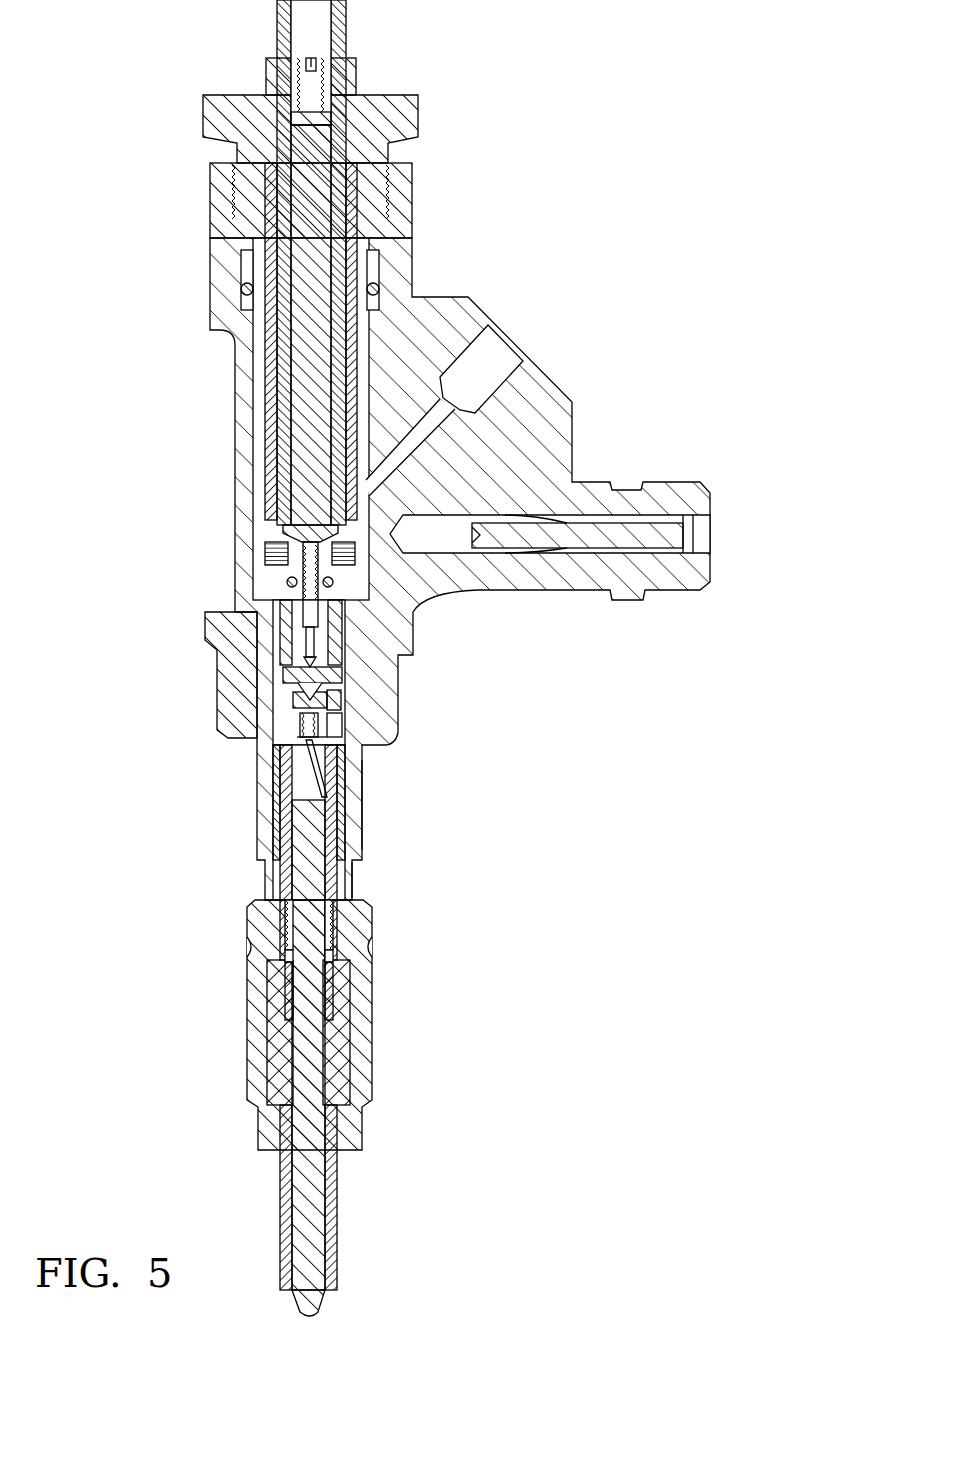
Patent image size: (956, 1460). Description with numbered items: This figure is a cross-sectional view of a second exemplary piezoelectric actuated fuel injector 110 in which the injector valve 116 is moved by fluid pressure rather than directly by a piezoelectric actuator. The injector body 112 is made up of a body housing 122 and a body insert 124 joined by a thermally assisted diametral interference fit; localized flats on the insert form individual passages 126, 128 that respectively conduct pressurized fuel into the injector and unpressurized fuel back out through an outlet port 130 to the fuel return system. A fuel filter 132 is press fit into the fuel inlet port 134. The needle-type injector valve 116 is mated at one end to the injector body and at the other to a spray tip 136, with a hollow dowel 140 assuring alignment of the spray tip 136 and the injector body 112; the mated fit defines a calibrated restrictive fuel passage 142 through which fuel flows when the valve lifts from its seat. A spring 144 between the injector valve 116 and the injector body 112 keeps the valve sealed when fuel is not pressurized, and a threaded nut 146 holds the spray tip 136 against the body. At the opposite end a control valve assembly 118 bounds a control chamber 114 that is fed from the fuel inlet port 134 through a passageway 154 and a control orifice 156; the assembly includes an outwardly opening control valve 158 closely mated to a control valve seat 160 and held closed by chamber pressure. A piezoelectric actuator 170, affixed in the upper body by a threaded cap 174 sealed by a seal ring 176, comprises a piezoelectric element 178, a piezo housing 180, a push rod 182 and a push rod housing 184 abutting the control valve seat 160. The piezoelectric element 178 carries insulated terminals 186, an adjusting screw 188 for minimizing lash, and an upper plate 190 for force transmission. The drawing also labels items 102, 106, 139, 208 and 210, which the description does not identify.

The threaded connection 102 is at (335, 905).
The valve head 106 is at (303, 528).
The piezoelectric actuated fuel injector 110 is at (562, 175).
The injector body 112 is at (600, 598).
The control chamber 114 is at (327, 734).
The injector valve 116 is at (300, 1220).
The control valve assembly 118 is at (325, 717).
The body housing 122 is at (366, 810).
The body insert 124 is at (360, 860).
The passage 126 is at (346, 777).
The passage 128 is at (278, 690).
The outlet port 130 is at (505, 372).
The fuel filter 132 is at (510, 548).
The fuel inlet port 134 is at (716, 522).
The spray tip 136 is at (335, 1135).
The tip 139 is at (322, 1293).
The hollow dowel 140 is at (323, 1050).
The calibrated restrictive fuel passage 142 is at (333, 1008).
The spring 144 is at (333, 948).
The threaded nut 146 is at (360, 1108).
The passageway 154 is at (318, 770).
The control orifice 156 is at (313, 740).
The control valve 158 is at (302, 707).
The control valve seat 160 is at (292, 686).
The piezoelectric actuator 170 is at (296, 352).
The threaded cap 174 is at (215, 125).
The seal ring 176 is at (375, 290).
The piezoelectric element 178 is at (292, 416).
The piezo housing 180 is at (268, 208).
The push rod 182 is at (283, 538).
The push rod housing 184 is at (360, 600).
The terminals 186 is at (335, 100).
The adjusting screw 188 is at (305, 62).
The upper plate 190 is at (305, 143).
The o-ring 208 is at (288, 583).
The packing 210 is at (268, 545).